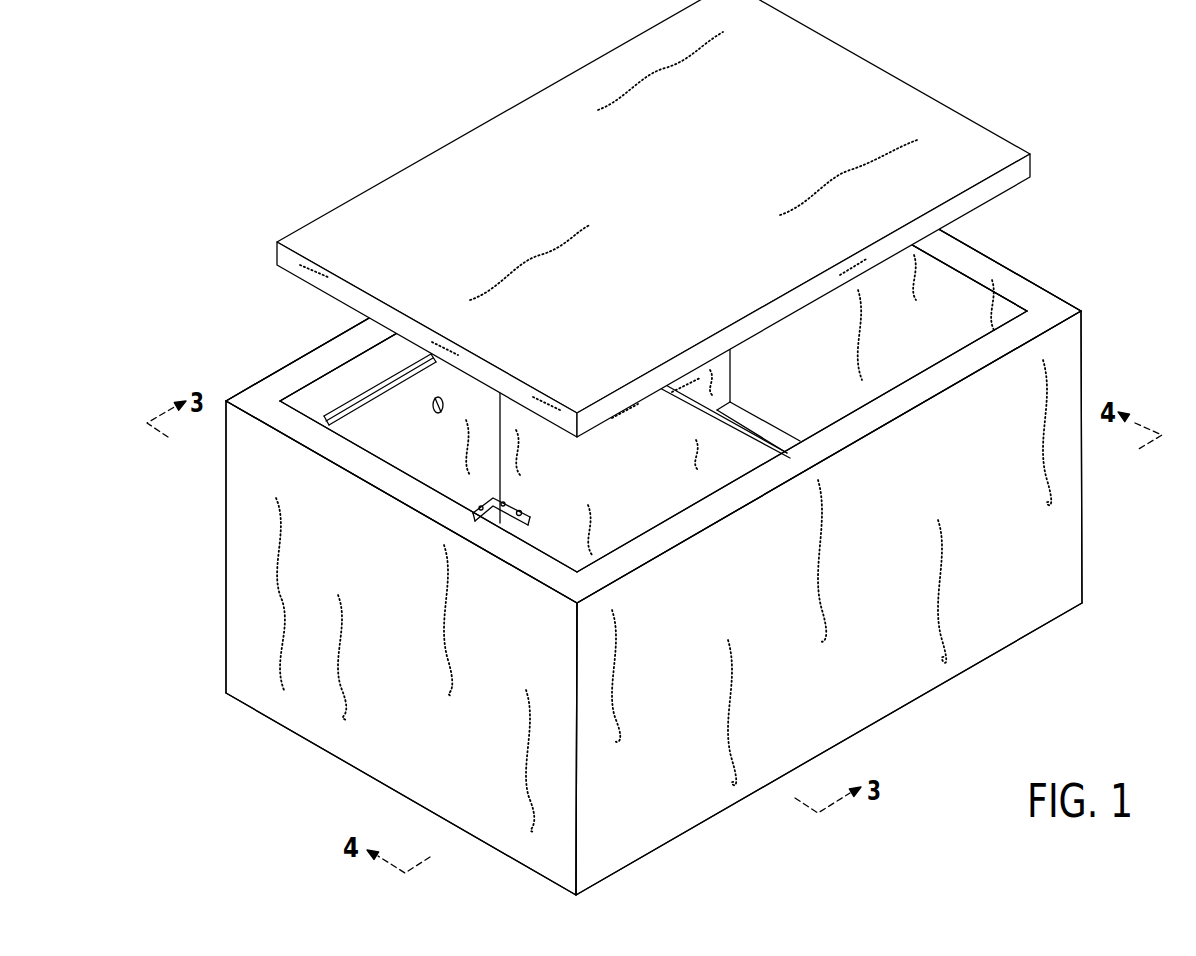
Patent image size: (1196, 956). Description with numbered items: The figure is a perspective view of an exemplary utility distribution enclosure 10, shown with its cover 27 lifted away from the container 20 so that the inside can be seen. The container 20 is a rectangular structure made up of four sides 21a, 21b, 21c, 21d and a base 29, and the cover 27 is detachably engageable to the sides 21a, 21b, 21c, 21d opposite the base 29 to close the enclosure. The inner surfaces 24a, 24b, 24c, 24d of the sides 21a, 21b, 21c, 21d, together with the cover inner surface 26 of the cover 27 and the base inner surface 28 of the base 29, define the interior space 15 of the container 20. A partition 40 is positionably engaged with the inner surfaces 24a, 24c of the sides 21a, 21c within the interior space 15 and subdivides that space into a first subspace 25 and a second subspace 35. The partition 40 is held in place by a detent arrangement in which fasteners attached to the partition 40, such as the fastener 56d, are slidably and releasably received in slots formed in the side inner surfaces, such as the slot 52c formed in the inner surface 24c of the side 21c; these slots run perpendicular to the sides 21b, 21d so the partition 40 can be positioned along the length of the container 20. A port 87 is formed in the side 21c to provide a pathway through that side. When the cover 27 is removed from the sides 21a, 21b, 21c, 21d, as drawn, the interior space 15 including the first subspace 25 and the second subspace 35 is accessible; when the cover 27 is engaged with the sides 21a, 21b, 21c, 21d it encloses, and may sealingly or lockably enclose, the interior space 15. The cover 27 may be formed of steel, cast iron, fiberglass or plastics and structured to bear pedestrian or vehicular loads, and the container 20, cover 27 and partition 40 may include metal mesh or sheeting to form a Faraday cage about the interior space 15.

The utility distribution enclosure 10 is at (1140, 172).
The container 20 is at (1083, 342).
The cover 27 is at (883, 100).
The side 21a is at (987, 620).
The side 21b is at (300, 700).
The side 21c is at (262, 378).
The side 21d is at (1037, 285).
The inner surface 24a is at (670, 503).
The inner surface 24b is at (440, 490).
The inner surface 24c is at (353, 430).
The inner surface 24d is at (947, 302).
The first subspace 25 is at (432, 463).
The interior space 15 is at (668, 453).
The second subspace 35 is at (898, 346).
The cover inner surface 26 is at (593, 430).
The base inner surface 28 is at (782, 438).
The base 29 is at (742, 410).
The partition 40 is at (742, 447).
The slot 52c is at (370, 393).
The fastener 56d is at (513, 498).
The port 87 is at (444, 405).